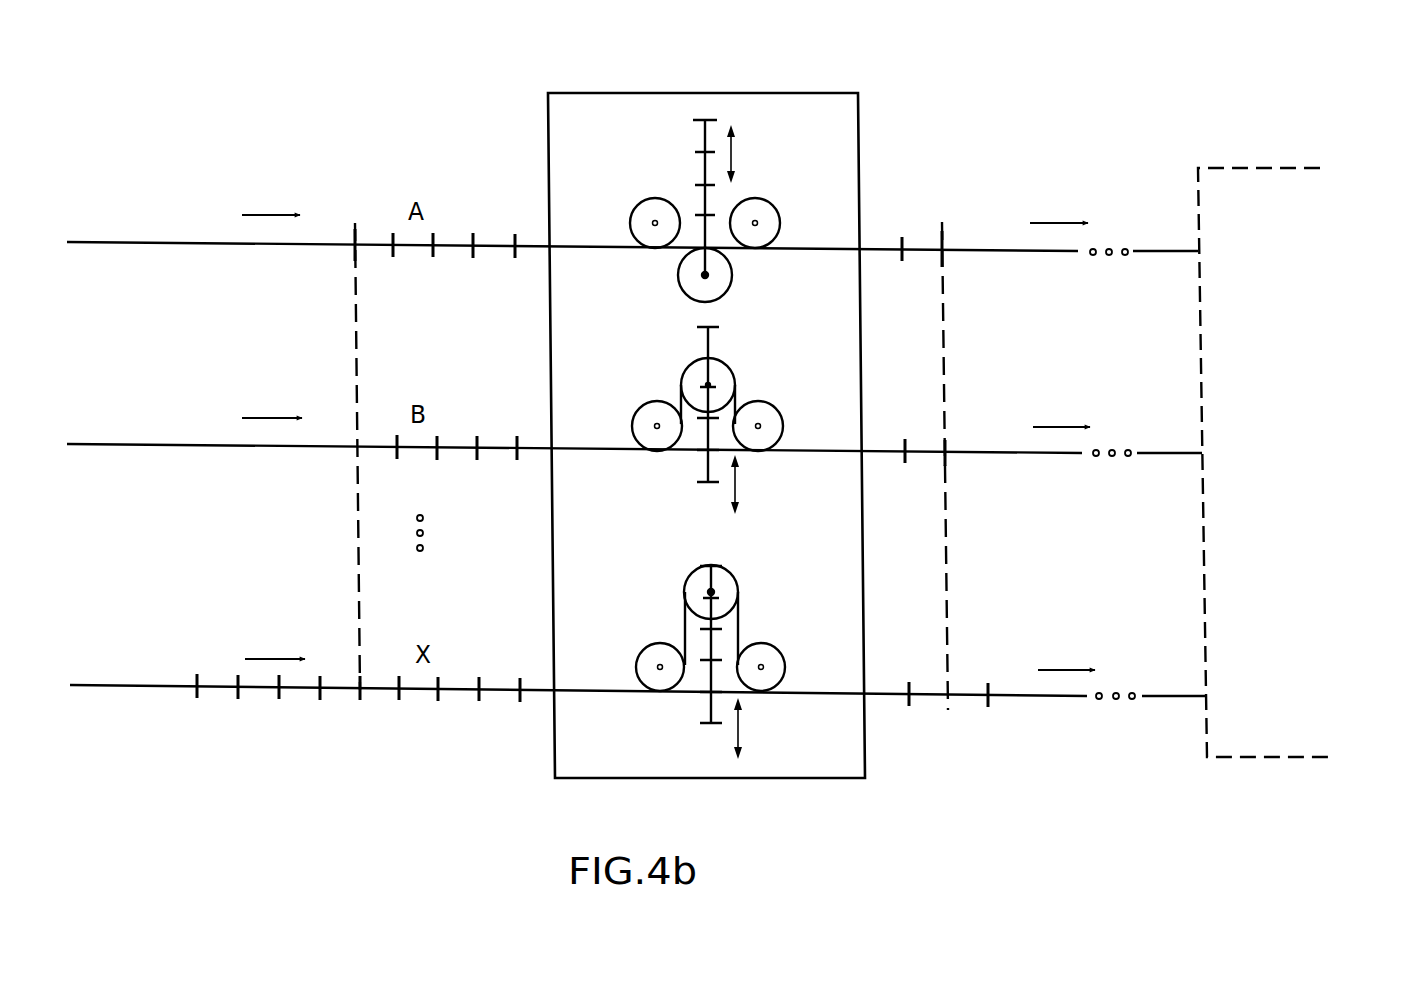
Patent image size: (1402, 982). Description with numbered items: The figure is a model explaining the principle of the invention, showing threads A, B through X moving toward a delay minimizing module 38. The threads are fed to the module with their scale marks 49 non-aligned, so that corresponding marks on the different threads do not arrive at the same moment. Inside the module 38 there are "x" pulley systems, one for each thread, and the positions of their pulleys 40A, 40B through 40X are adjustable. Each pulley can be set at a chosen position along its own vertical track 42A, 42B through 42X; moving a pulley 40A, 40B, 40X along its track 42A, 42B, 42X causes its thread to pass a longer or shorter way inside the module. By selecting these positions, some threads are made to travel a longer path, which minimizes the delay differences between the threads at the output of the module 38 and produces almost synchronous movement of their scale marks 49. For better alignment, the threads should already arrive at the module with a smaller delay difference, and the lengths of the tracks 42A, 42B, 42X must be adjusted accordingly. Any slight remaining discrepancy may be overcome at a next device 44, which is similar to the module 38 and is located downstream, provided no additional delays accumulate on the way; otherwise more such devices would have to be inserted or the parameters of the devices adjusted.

The delay minimizing module 38 is at (797, 93).
The pulley 40A is at (752, 165).
The pulley 40B is at (756, 369).
The pulley 40X is at (759, 609).
The vertical track 42A is at (703, 142).
The vertical track 42B is at (705, 343).
The vertical track 42X is at (708, 647).
The next device 44 is at (1260, 168).
The scale marks 49 is at (352, 243).